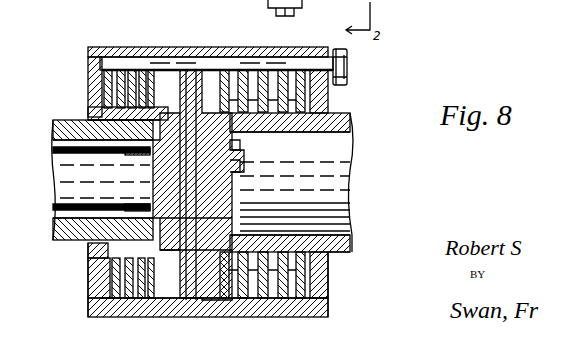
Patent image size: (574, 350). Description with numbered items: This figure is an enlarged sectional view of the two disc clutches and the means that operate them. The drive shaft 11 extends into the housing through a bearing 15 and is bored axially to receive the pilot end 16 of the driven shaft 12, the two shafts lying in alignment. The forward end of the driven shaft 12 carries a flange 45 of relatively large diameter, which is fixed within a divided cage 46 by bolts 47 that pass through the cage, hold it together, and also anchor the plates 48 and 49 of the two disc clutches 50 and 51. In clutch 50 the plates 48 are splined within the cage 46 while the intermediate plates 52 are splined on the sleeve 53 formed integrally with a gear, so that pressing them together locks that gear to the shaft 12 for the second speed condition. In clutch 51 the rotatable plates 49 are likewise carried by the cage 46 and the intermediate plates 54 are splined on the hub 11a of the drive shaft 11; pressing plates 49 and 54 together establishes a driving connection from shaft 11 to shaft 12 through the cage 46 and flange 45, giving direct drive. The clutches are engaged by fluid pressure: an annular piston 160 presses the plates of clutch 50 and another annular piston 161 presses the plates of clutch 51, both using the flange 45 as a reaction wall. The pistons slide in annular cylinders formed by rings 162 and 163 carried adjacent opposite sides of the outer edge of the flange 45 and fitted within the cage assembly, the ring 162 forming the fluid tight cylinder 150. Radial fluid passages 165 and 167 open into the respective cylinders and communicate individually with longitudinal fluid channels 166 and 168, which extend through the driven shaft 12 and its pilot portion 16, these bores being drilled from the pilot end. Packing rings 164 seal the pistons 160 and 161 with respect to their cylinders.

The drive shaft 11 is at (68, 122).
The hub of the driving shaft 11a is at (88, 246).
The driven shaft 12 is at (332, 143).
The bearing 15 is at (198, 185).
The pilot end 16 is at (55, 165).
The flange 45 is at (185, 300).
The cage 46 is at (328, 298).
The bolts 47 is at (88, 60).
The plates 48 is at (295, 70).
The plates 49 is at (120, 80).
The disc clutch 50 is at (263, 300).
The disc clutch 51 is at (117, 298).
The plates 52 is at (284, 300).
The sleeve 53 is at (330, 254).
The intermediate plates 54 is at (130, 298).
The cylinder 150 is at (196, 231).
The piston 160 is at (243, 300).
The piston 161 is at (150, 80).
The ring 162 is at (224, 300).
The ring 163 is at (160, 300).
The packing rings 164 is at (208, 78).
The radial fluid passage 165 is at (236, 150).
The longitudinal fluid channel 166 is at (335, 164).
The radial fluid passage 167 is at (236, 172).
The longitudinal fluid channel 168 is at (336, 207).